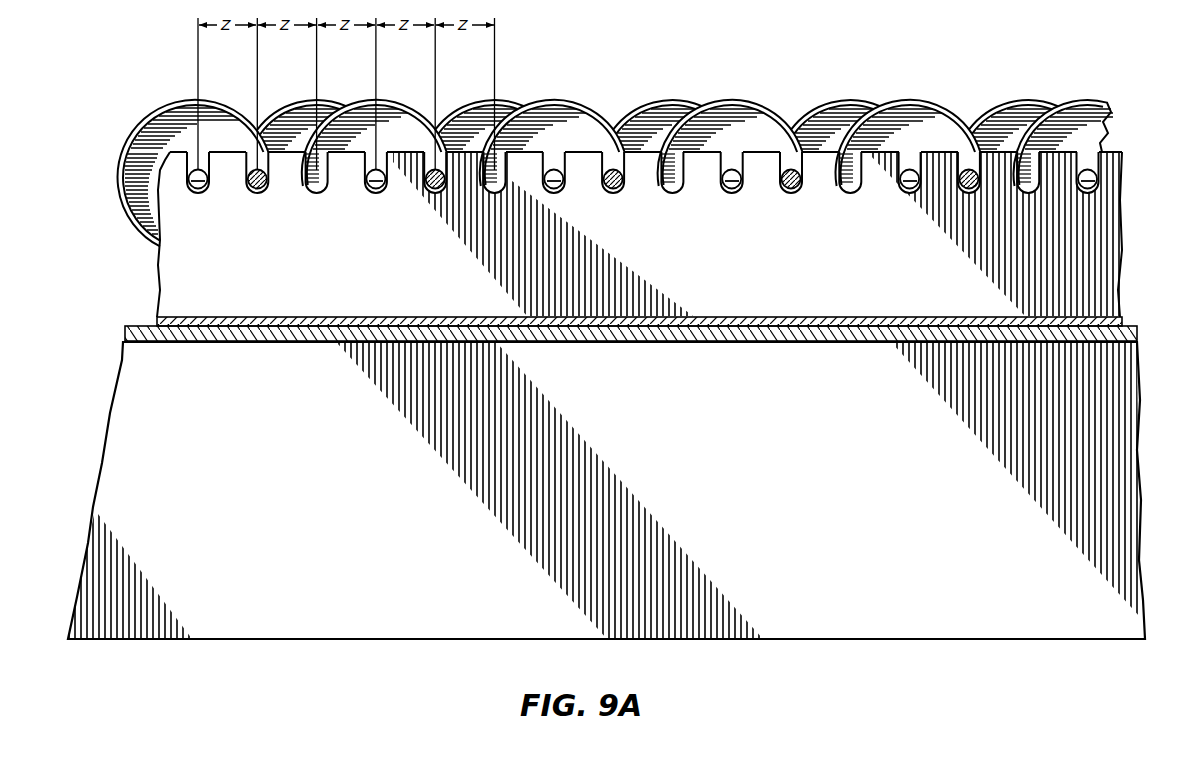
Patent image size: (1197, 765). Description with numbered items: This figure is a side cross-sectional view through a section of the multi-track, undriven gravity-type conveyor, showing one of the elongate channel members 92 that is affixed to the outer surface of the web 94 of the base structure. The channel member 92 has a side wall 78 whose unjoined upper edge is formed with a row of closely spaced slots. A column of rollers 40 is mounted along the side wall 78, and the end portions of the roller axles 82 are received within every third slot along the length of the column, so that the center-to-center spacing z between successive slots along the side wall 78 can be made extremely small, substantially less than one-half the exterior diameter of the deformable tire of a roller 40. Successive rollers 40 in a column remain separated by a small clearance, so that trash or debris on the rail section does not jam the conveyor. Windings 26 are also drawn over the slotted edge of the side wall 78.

The coil windings 26 is at (615, 148).
The roller 40 is at (723, 120).
The side wall 78 is at (766, 257).
The axle 82 is at (607, 191).
The channel member 92 is at (1120, 247).
The web 94 is at (143, 326).